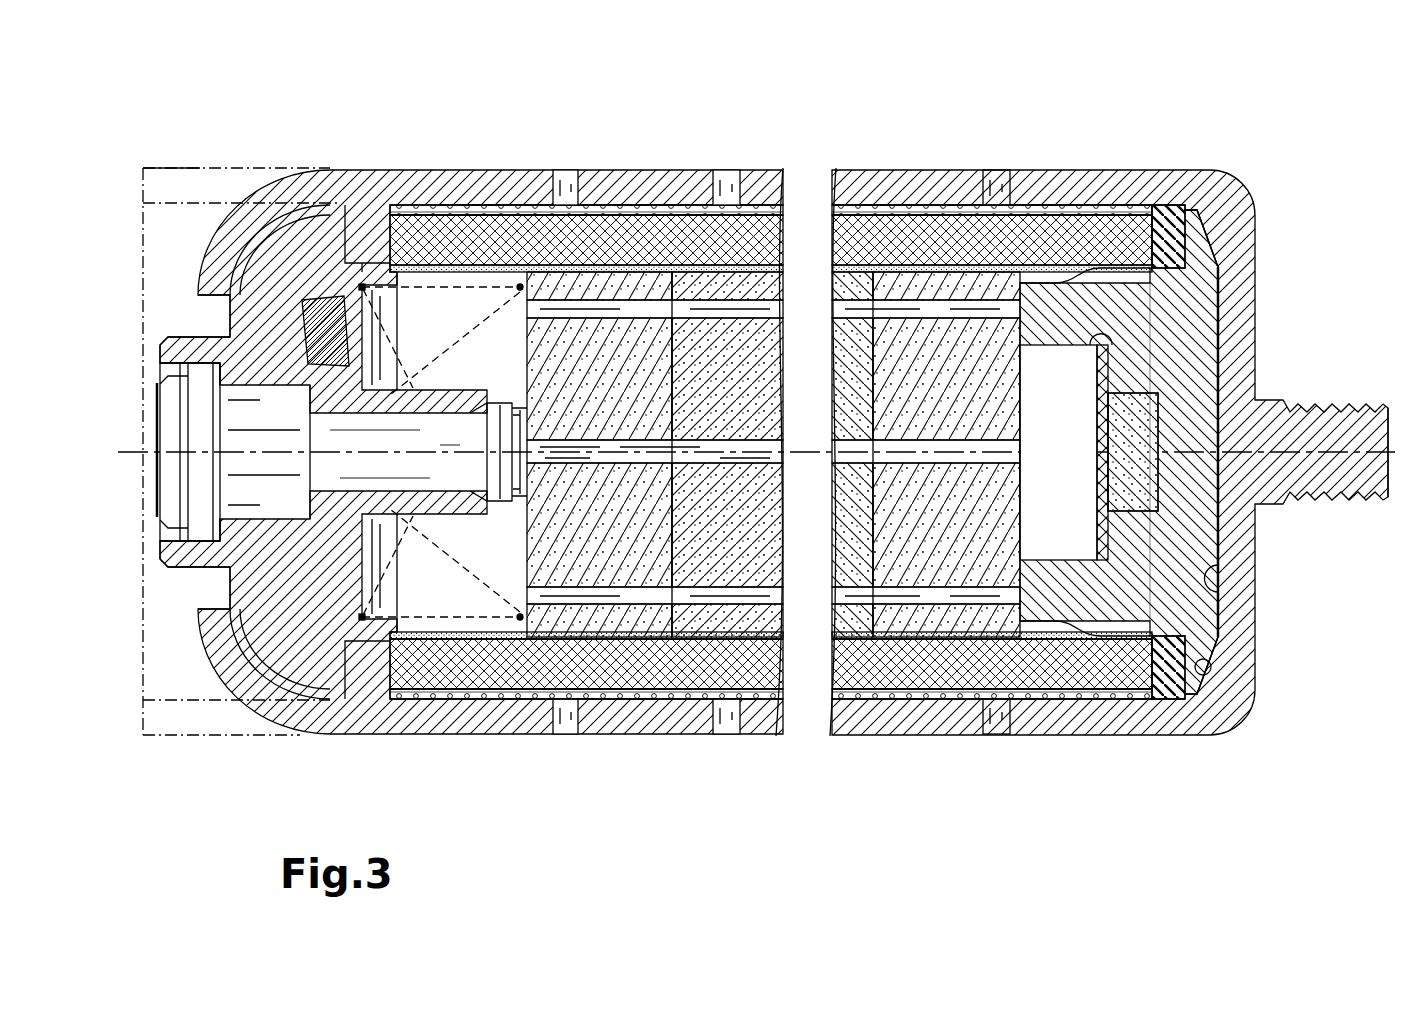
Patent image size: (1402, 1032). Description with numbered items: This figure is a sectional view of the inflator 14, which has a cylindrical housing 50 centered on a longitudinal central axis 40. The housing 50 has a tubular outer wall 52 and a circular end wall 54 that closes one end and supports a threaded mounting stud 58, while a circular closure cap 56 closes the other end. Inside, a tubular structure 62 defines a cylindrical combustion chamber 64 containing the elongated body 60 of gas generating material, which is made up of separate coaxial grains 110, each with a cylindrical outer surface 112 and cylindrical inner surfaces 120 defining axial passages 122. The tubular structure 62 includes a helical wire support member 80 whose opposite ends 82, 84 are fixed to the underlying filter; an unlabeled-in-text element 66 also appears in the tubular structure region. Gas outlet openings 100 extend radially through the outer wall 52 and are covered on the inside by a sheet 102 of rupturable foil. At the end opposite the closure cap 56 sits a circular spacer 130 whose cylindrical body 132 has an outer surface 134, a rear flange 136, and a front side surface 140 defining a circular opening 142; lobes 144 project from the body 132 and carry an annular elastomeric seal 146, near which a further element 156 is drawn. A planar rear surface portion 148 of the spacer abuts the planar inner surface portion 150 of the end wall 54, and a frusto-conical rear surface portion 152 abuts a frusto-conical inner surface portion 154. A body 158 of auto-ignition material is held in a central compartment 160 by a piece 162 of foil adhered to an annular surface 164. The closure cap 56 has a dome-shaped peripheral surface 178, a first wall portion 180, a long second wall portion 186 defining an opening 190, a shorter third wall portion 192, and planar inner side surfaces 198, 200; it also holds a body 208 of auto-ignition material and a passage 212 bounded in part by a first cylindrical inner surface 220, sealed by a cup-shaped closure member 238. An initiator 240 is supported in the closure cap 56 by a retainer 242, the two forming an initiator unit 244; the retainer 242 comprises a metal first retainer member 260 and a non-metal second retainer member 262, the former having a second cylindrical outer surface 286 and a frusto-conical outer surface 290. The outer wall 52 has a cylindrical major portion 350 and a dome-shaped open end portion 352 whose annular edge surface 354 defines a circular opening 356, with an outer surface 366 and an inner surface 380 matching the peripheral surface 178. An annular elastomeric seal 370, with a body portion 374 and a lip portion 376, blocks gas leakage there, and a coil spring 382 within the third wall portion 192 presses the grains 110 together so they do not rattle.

The inflator 14 is at (180, 110).
The longitudinal central axis 40 is at (130, 452).
The cylindrical housing 50 is at (503, 166).
The tubular outer wall 52 is at (505, 202).
The circular end wall 54 is at (1237, 302).
The closure cap 56 is at (226, 313).
The threaded mounting stud 58 is at (1330, 490).
The body of gas generating material 60 is at (615, 252).
The tubular structure 62 is at (665, 232).
The combustion chamber 64 is at (718, 394).
The mesh layer 66 is at (945, 230).
The support member 80 is at (903, 200).
The end of support member 82 is at (402, 212).
The end of support member 84 is at (1130, 230).
The gas outlet openings 100 is at (575, 168).
The sheet of rupturable pressure controlling material 102 is at (886, 212).
The grains 110 is at (477, 640).
The cylindrical outer surface 112 is at (527, 640).
The cylindrical inner surfaces 120 is at (553, 318).
The cylindrical passage 122 is at (520, 305).
The circular spacer 130 is at (1222, 364).
The cylindrical body of spacer 132 is at (1147, 370).
The cylindrical outer surface of spacer body 134 is at (1062, 283).
The flange 136 is at (1212, 230).
The annular front side surface 140 is at (1022, 365).
The circular opening 142 is at (1022, 416).
The lobes 144 is at (1185, 235).
The annular elastomeric seal 146 is at (1165, 200).
The planar rear surface portion 148 is at (1223, 536).
The planar inner surface portion 150 is at (1212, 580).
The frusto-conical rear surface portion 152 is at (1197, 683).
The frusto-conical inner surface portion 154 is at (1203, 660).
The wedge top 156 is at (1148, 215).
The body of auto-ignition material 158 is at (1120, 443).
The compartment 160 is at (1108, 467).
The piece of metal foil 162 is at (1100, 488).
The annular surface 164 is at (1160, 335).
The peripheral surface 178 is at (272, 228).
The first wall portion 180 is at (170, 552).
The second wall portion 186 is at (425, 515).
The circular opening 190 is at (507, 423).
The third wall portion 192 is at (358, 598).
The first planar inner side surface 198 is at (362, 527).
The second planar inner side surface 200 is at (340, 690).
The body of auto-ignition material 208 is at (337, 333).
The passage 212 is at (320, 444).
The first cylindrical inner surface 220 is at (215, 540).
The cup-shaped closure member 238 is at (500, 474).
The initiator 240 is at (350, 470).
The retainer 242 is at (163, 410).
The initiator unit 244 is at (157, 392).
The first retainer member 260 is at (205, 378).
The second retainer member 262 is at (253, 407).
The second cylindrical outer surface 286 is at (180, 563).
The frusto-conical outer surface 290 is at (167, 528).
The major portion 350 is at (523, 202).
The open end portion 352 is at (225, 233).
The annular edge surface 354 is at (214, 296).
The circular opening 356 is at (195, 598).
The outer surface 366 is at (230, 668).
The annular elastomeric seal 370 is at (372, 200).
The body portion of seal 374 is at (385, 245).
The lip portion 376 is at (305, 215).
The inner surface 380 is at (287, 665).
The coil spring 382 is at (428, 225).